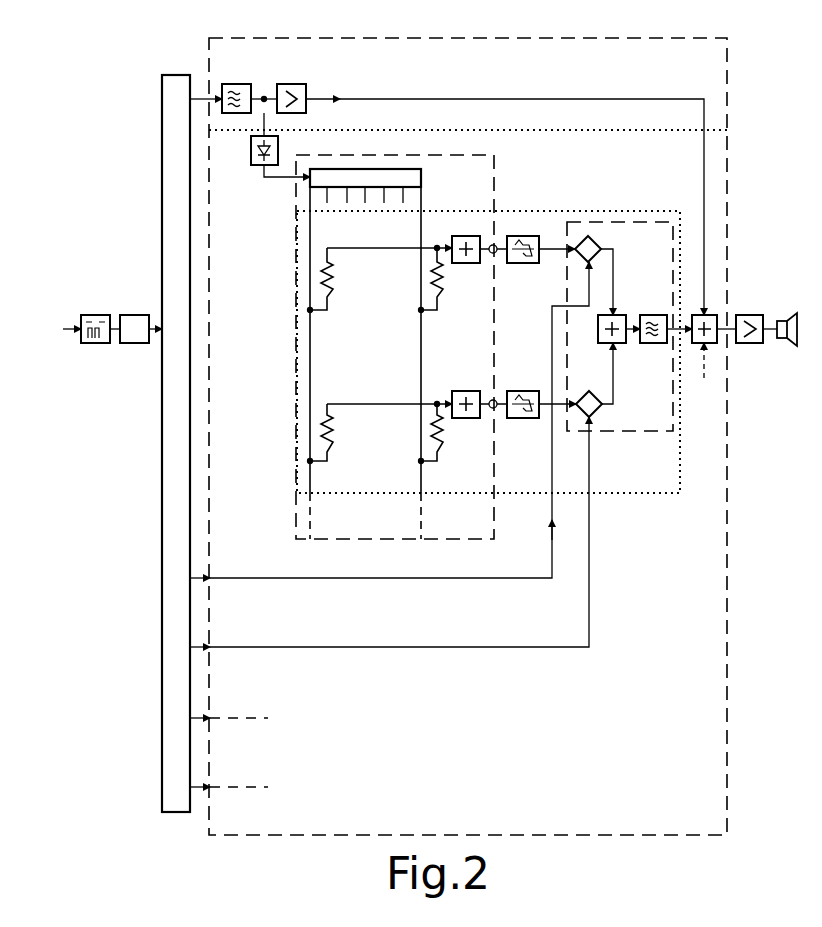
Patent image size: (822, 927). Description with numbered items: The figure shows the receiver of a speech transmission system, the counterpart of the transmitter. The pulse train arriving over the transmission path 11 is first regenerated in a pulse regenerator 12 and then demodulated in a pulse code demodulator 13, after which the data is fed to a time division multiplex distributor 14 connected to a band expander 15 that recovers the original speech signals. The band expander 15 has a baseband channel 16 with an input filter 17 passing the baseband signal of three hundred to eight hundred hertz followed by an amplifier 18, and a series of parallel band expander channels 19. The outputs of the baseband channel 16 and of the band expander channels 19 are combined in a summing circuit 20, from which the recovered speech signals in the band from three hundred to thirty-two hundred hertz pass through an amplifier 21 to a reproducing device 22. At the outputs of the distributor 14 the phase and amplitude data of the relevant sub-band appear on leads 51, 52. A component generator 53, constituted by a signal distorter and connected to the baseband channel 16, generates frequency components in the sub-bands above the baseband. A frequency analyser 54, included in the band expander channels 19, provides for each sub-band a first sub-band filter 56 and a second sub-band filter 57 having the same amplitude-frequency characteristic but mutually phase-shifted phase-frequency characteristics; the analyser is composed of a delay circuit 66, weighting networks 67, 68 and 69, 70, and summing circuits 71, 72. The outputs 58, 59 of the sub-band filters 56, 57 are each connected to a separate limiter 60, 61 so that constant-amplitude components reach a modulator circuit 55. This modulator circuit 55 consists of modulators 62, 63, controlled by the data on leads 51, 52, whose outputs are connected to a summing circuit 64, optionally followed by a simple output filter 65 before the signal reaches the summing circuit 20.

The transmission path 11 is at (72, 326).
The pulse regenerator 12 is at (100, 315).
The pulse code demodulator 13 is at (135, 315).
The time division multiplex distributor 14 is at (173, 75).
The band expander 15 is at (661, 36).
The baseband channel 16 is at (547, 64).
The input filter 17 is at (238, 84).
The amplifier 18 is at (292, 84).
The band expander channels 19 is at (651, 209).
The summing circuit 20 is at (717, 318).
The amplifier 21 is at (749, 315).
The reproducing device 22 is at (787, 313).
The lead 51 is at (283, 578).
The lead 52 is at (283, 647).
The component generator 53 is at (273, 154).
The frequency analyser 54 is at (484, 153).
The modulator circuit 55 is at (652, 432).
The first sub-band filter 56 is at (362, 338).
The second sub-band filter 57 is at (364, 482).
The output 58 is at (496, 253).
The output 59 is at (496, 408).
The limiter 60 is at (525, 236).
The limiter 61 is at (527, 418).
The modulator 62 is at (590, 236).
The modulator 63 is at (600, 412).
The summing circuit 64 is at (620, 315).
The output filter 65 is at (655, 343).
The delay circuit 66 is at (417, 171).
The weighting network 67 is at (333, 270).
The weighting network 68 is at (443, 270).
The weighting network 69 is at (333, 425).
The weighting network 70 is at (443, 430).
The summing circuit 71 is at (454, 236).
The summing circuit 72 is at (470, 391).